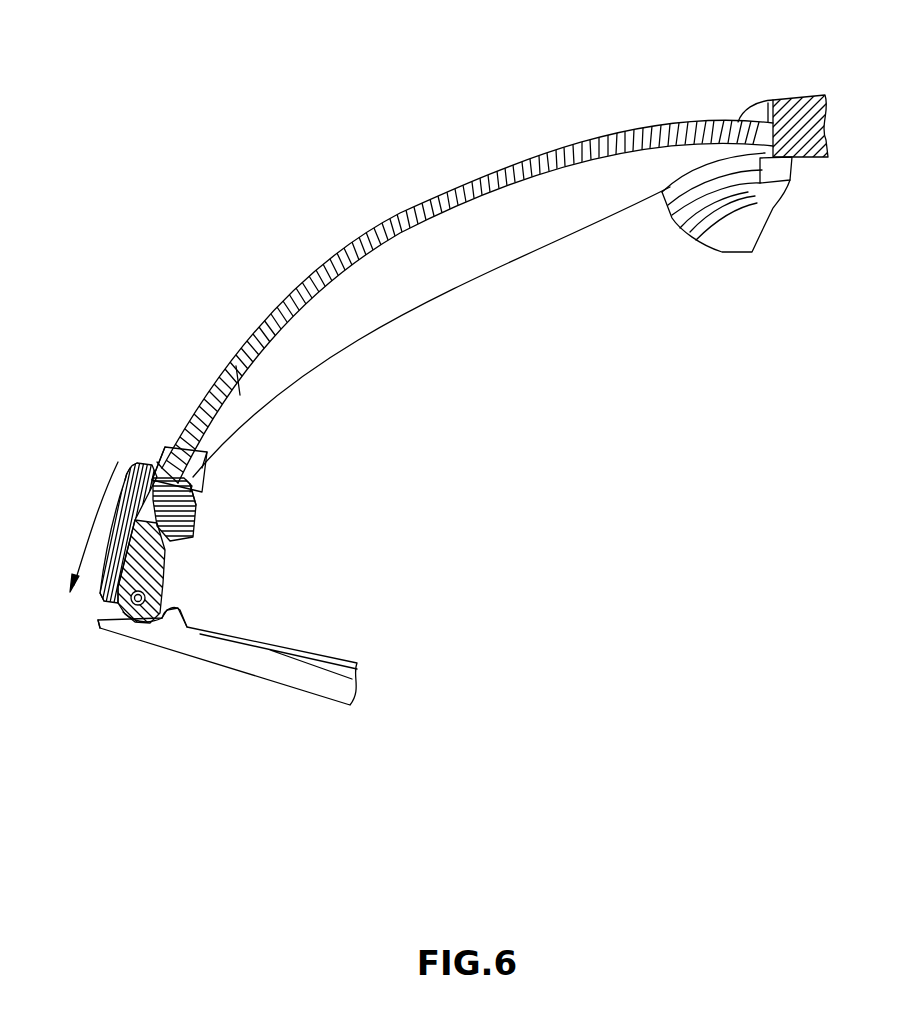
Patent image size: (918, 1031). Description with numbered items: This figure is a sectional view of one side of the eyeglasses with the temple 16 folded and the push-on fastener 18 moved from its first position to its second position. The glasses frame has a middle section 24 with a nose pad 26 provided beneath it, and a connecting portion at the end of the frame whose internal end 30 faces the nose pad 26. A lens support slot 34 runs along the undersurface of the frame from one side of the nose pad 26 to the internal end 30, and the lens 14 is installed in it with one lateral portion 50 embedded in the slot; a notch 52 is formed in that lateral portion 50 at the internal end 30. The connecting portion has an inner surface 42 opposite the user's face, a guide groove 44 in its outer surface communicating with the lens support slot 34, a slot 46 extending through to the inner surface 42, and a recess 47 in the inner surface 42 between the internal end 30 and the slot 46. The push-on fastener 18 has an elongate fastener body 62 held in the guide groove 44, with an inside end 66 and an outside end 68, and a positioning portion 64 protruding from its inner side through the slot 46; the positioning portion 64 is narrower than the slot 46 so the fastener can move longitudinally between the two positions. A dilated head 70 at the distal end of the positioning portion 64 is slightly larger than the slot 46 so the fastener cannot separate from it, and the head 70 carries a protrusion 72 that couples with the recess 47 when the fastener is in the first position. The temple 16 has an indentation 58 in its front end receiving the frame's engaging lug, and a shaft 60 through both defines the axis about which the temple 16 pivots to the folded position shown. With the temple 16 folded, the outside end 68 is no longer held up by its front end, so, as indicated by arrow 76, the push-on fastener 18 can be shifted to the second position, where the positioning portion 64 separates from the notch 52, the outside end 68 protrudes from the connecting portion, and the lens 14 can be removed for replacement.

The lens 14 is at (398, 233).
The temple 16 is at (320, 692).
The push-on fastener 18 is at (118, 499).
The middle section 24 is at (800, 107).
The nose pad 26 is at (743, 233).
The internal end 30 is at (236, 366).
The lens support slot 34 is at (772, 100).
The inner surface 42 is at (172, 596).
The guide groove 44 is at (100, 583).
The slot 46 is at (164, 563).
The recess 47 is at (228, 467).
The lateral portion 50 is at (193, 447).
The notch 52 is at (152, 447).
The indentation 58 is at (167, 630).
The shaft 60 is at (139, 606).
The fastener body 62 is at (121, 456).
The positioning portion 64 is at (190, 516).
The inside end 66 is at (148, 465).
The outside end 68 is at (98, 621).
The dilated head 70 is at (177, 510).
The protrusion 72 is at (190, 484).
The arrow 76 is at (87, 518).